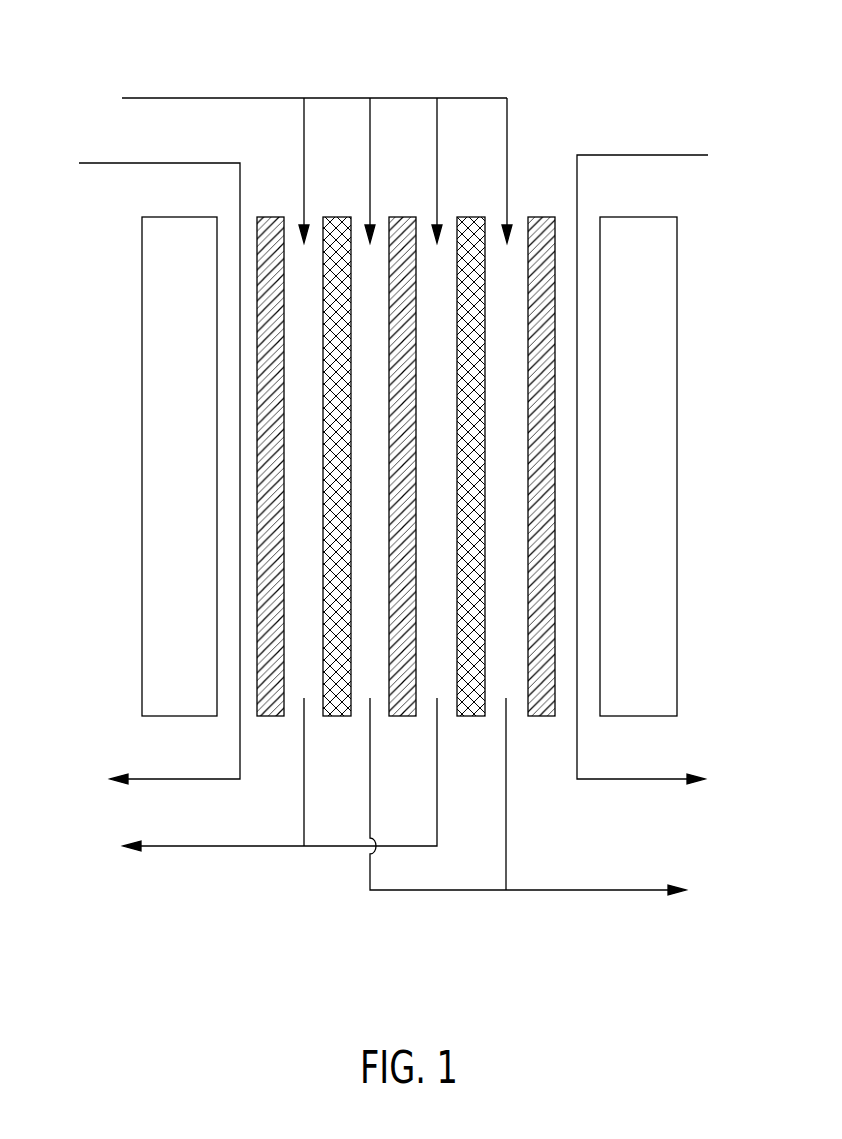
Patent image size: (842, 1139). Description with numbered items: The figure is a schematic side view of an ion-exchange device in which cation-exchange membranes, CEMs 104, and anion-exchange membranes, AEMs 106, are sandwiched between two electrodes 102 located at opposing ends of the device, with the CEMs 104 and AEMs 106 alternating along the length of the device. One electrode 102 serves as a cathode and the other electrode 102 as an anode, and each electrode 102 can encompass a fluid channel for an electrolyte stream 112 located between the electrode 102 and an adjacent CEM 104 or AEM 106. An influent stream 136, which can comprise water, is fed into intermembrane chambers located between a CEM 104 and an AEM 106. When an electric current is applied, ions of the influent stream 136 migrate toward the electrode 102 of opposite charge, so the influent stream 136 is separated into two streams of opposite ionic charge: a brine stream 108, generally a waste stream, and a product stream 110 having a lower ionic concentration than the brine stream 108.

The electrode 102 is at (142, 400).
The CEM 104 is at (272, 215).
The AEM 106 is at (338, 215).
The brine stream 108 is at (180, 849).
The product stream 110 is at (607, 891).
The electrolyte stream 112 is at (100, 163).
The influent stream 136 is at (172, 98).